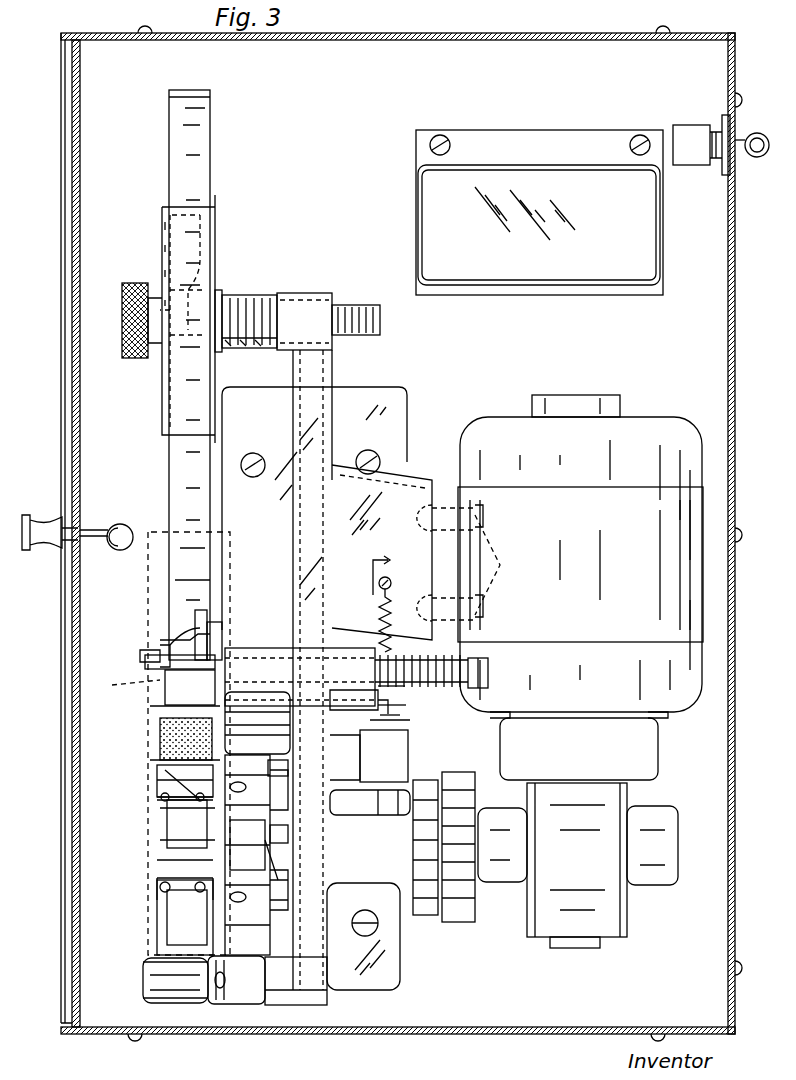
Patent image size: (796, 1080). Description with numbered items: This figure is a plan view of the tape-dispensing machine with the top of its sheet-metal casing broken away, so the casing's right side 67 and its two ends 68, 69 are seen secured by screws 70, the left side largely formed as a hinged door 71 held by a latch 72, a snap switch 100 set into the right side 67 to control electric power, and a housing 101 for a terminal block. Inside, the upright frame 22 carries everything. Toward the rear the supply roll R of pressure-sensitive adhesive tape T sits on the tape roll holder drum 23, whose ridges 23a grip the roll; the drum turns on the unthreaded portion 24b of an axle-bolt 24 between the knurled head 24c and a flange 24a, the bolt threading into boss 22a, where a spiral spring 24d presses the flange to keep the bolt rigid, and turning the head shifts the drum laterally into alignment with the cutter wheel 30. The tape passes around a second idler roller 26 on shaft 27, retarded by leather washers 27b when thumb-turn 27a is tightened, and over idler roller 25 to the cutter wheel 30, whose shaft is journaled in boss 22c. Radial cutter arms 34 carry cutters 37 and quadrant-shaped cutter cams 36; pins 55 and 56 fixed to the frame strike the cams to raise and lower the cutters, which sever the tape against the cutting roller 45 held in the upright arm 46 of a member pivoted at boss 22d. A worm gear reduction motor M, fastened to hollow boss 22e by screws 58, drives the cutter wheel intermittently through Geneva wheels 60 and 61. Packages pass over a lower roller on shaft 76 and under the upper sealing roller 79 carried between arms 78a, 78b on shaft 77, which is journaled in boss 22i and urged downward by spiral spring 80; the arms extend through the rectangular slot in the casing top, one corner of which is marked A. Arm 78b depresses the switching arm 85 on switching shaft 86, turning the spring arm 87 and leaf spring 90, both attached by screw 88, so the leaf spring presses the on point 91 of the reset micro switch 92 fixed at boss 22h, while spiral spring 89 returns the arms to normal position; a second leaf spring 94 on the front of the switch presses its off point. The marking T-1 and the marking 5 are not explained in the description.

The supply roll R is at (205, 112).
The worm gear reduction motor M is at (628, 432).
The pressure-sensitive adhesive tape T is at (175, 582).
The type bar element T-1 is at (168, 780).
The corner of slot ABCD A is at (181, 742).
The section line 5 is at (377, 899).
The upright frame 22 is at (330, 378).
The boss 22a is at (300, 295).
The boss 22c is at (363, 936).
The boss 22d is at (282, 990).
The hollow boss 22e is at (405, 490).
The boss 22h is at (345, 770).
The boss 22i is at (275, 670).
The tape roll holder drum 23 is at (168, 258).
The ridges 23a is at (165, 248).
The axle-bolt 24 is at (380, 320).
The flange 24a is at (226, 305).
The unthreaded portion 24b is at (220, 292).
The axle-bolt head 24c is at (140, 360).
The spiral spring 24d is at (226, 344).
The idler roller 25 is at (123, 686).
The second idler roller 26 is at (165, 645).
The horizontal shaft 27 is at (140, 656).
The thumb-turn 27a is at (160, 642).
The leather washers 27b is at (160, 642).
The cutter wheel 30 is at (195, 834).
The cutter arms 34 is at (254, 850).
The cutter cam 36 is at (268, 762).
The cutters 37 is at (160, 796).
The cutting roller 45 is at (180, 995).
The upwardly extending arm 46 is at (248, 985).
The cutter cam pin 55 is at (279, 845).
The cutter cam pin 56 is at (288, 768).
The screws 58 is at (500, 565).
The Geneva wheel 60 is at (470, 890).
The Geneva wheel 61 is at (424, 905).
The right side 67 is at (735, 447).
The end 68 is at (380, 1034).
The end 69 is at (495, 34).
The screws 70 is at (142, 31).
The door 71 is at (72, 341).
The latch 72 is at (125, 525).
The shaft 76 is at (252, 740).
The roller arm shaft 77 is at (478, 665).
The roller arm 78a is at (150, 720).
The roller arm 78b is at (225, 690).
The upper sealing roller 79 is at (165, 744).
The spiral spring 80 is at (410, 655).
The switching arm 85 is at (222, 636).
The switching shaft 86 is at (395, 690).
The spring arm 87 is at (354, 699).
The screw 88 is at (380, 710).
The spiral spring 89 is at (380, 625).
The leaf spring 90 is at (398, 708).
The on point 91 is at (395, 723).
The reset micro switch 92 is at (400, 740).
The leaf spring 94 is at (380, 800).
The snap switch 100 is at (700, 103).
The terminal block housing 101 is at (515, 258).